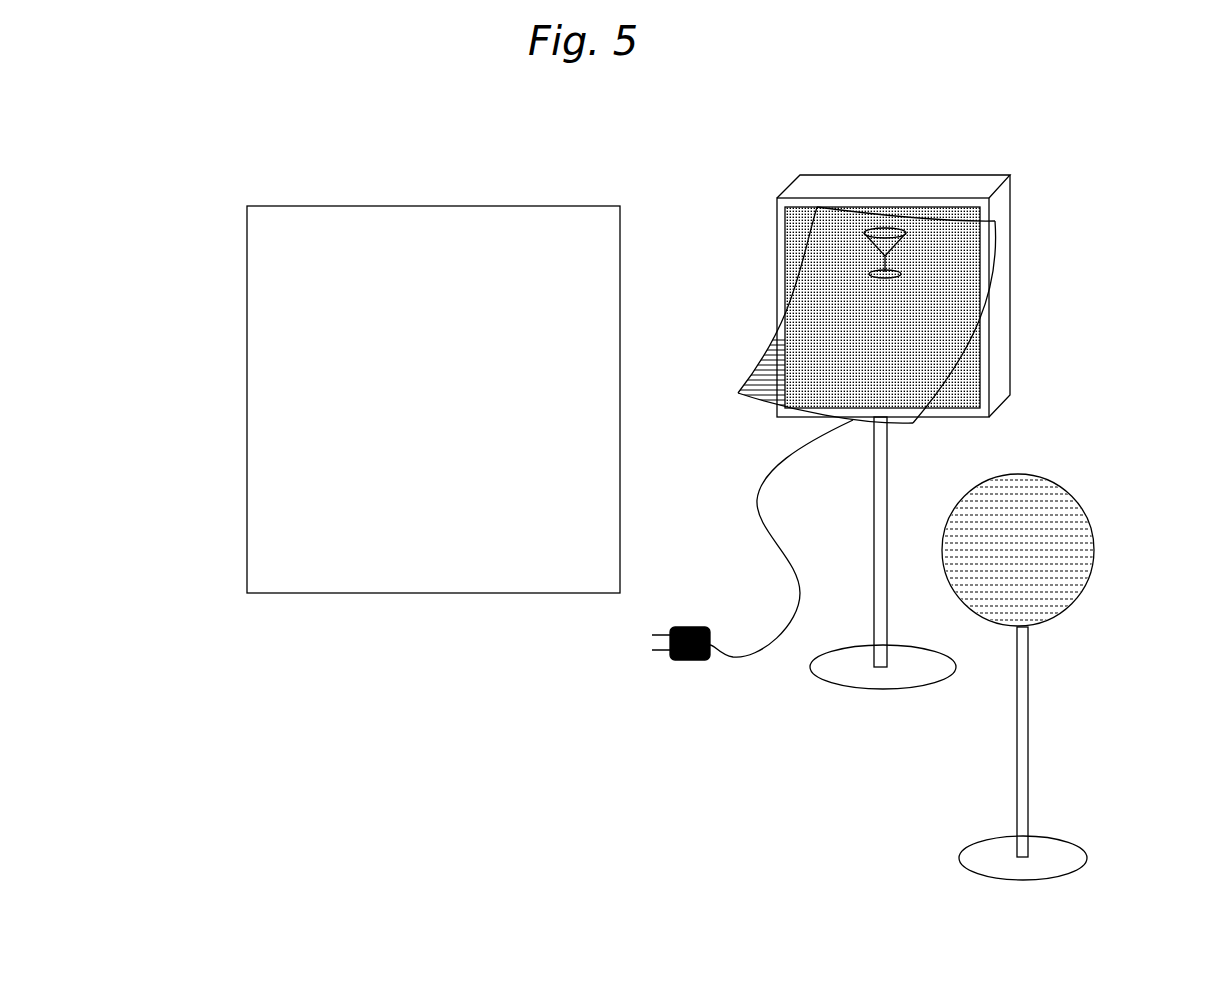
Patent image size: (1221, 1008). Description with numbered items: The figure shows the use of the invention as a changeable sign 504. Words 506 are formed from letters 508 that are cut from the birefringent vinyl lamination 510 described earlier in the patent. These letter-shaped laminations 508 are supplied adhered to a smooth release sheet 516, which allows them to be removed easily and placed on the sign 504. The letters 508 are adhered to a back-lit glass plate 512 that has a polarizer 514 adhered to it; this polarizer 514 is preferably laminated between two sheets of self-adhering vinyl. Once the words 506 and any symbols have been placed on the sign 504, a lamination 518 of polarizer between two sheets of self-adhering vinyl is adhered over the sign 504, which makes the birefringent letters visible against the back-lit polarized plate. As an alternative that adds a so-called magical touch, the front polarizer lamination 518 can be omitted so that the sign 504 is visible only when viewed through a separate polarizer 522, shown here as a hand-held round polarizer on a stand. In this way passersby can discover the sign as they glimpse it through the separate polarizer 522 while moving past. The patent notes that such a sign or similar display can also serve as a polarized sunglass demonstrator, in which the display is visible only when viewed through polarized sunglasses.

The changeable sign 504 is at (880, 294).
The words 506 is at (841, 330).
The letters 508 is at (275, 277).
The birefringent vinyl lamination 510 is at (391, 350).
The back-lit glass plate 512 is at (980, 350).
The polarizer 514 is at (943, 400).
The release sheet 516 is at (258, 568).
The lamination 518 is at (742, 402).
The separate polarizer 522 is at (1093, 557).